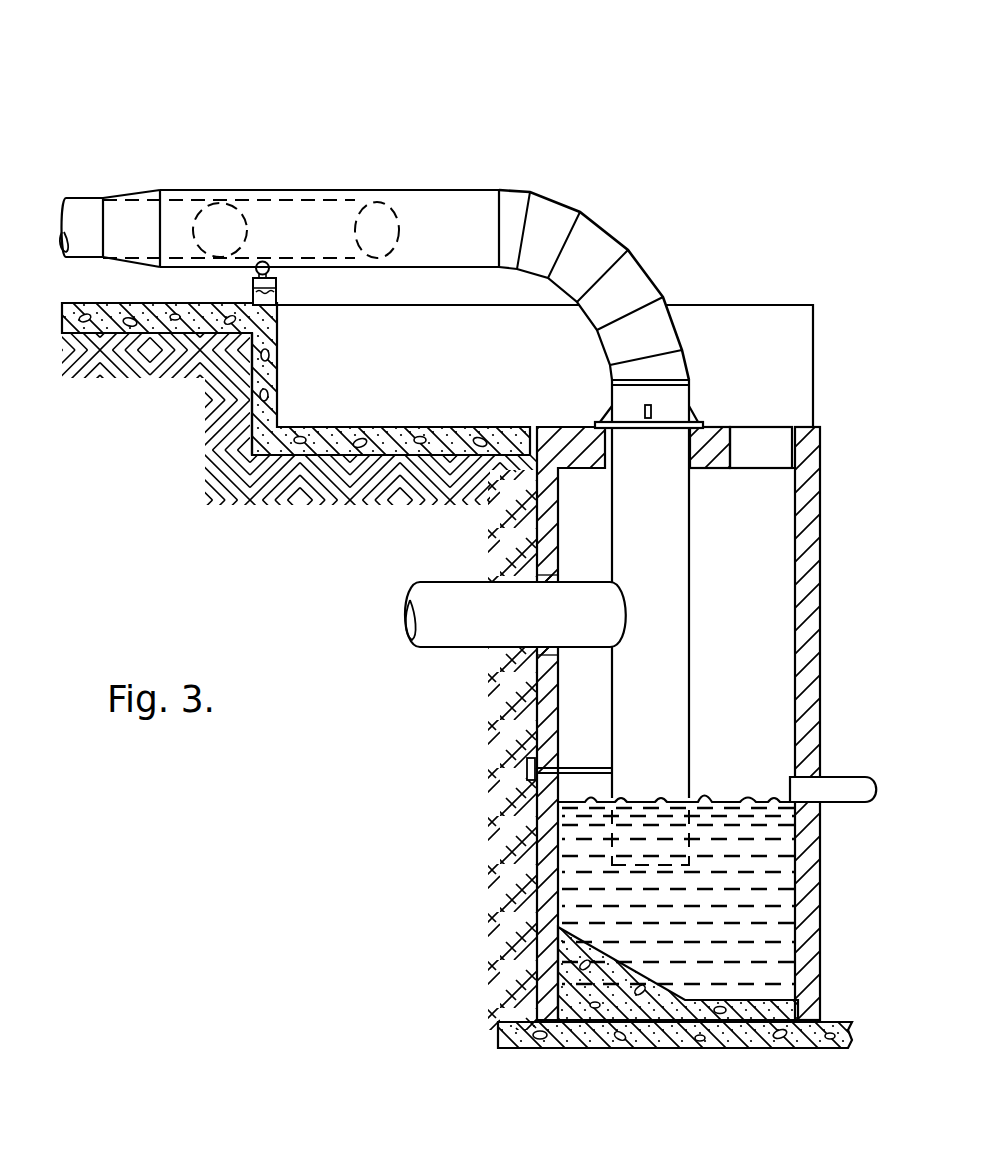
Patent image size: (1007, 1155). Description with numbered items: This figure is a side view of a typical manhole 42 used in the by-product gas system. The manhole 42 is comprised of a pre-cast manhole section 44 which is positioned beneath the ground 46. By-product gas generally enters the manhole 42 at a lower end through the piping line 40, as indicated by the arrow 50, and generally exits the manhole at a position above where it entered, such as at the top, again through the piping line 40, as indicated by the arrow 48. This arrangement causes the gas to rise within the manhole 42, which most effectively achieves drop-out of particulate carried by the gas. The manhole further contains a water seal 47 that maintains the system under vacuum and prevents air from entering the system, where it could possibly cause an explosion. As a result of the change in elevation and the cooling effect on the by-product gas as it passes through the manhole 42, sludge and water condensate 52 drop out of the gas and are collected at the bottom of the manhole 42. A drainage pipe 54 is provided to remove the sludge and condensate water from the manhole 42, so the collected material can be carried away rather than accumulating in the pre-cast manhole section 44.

The piping line 40 is at (80, 195).
The manhole 42 is at (656, 104).
The pre-cast manhole section 44 is at (822, 505).
The ground 46 is at (90, 305).
The water seal 47 is at (742, 797).
The arrow 48 is at (93, 228).
The arrow 50 is at (375, 612).
The sludge and water condensate 52 is at (640, 1040).
The drainage pipe 54 is at (851, 776).